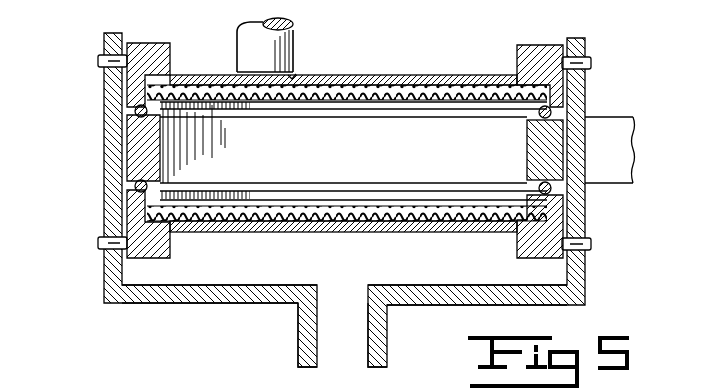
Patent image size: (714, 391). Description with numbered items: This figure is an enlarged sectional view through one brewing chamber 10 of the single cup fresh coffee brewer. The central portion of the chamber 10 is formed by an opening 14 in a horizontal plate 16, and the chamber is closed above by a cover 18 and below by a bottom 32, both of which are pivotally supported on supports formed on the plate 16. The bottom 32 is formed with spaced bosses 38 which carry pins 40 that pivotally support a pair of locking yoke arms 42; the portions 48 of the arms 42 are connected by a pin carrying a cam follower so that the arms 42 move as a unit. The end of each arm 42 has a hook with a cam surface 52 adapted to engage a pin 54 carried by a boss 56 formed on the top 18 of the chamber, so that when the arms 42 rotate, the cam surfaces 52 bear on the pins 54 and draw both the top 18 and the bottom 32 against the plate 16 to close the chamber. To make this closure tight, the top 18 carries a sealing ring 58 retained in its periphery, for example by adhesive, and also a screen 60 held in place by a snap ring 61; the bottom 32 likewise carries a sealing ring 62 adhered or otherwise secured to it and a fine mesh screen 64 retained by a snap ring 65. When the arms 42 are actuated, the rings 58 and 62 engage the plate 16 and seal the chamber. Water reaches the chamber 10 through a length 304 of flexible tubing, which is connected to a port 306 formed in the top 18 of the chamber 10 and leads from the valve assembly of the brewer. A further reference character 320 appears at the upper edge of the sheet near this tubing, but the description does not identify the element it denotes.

The brewing chamber 10 is at (42, 177).
The opening 14 is at (520, 152).
The horizontal plate 16 is at (634, 176).
The cover 18 is at (452, 75).
The bottom 32 is at (362, 233).
The boss 38 is at (172, 254).
The pin 40 is at (99, 244).
The locking yoke arm 42 is at (104, 34).
The arm portion 48 is at (303, 368).
The cam surface 52 is at (121, 55).
The pin 54 is at (98, 62).
The boss 56 is at (170, 46).
The sealing ring 58 is at (135, 111).
The screen 60 is at (372, 86).
The snap ring 61 is at (585, 84).
The sealing ring 62 is at (135, 187).
The fine mesh screen 64 is at (464, 233).
The snap ring 65 is at (553, 190).
The length of flexible tubing 304 is at (294, 42).
The port 306 is at (292, 76).
The connection 320 is at (621, 4).